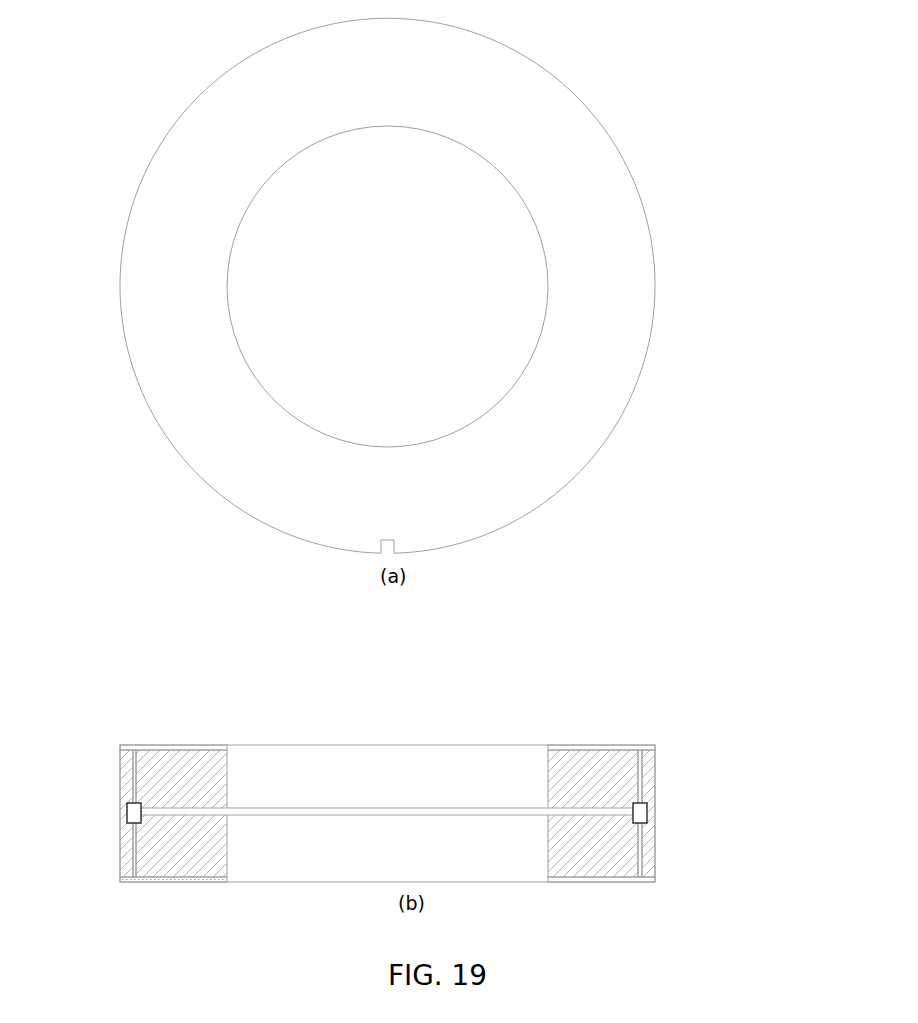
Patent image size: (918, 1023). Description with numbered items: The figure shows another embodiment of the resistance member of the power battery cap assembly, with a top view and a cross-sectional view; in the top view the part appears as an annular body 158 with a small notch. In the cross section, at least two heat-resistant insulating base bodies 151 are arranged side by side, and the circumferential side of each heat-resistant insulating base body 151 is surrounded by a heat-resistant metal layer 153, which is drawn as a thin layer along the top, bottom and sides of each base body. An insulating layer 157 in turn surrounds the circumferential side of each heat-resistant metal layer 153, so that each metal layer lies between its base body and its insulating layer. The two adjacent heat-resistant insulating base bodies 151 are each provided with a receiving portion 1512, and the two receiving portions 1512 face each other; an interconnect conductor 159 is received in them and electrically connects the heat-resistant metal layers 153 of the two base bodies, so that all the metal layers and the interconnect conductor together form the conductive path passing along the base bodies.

The annular ring body 158 is at (618, 285).
The heat-resistant insulating base body 151 is at (556, 772).
The heat-resistant metal layer 153 is at (584, 752).
The insulating layer 157 is at (651, 772).
The interconnect conductor 159 is at (648, 810).
The receiving portion 1512 is at (648, 802).